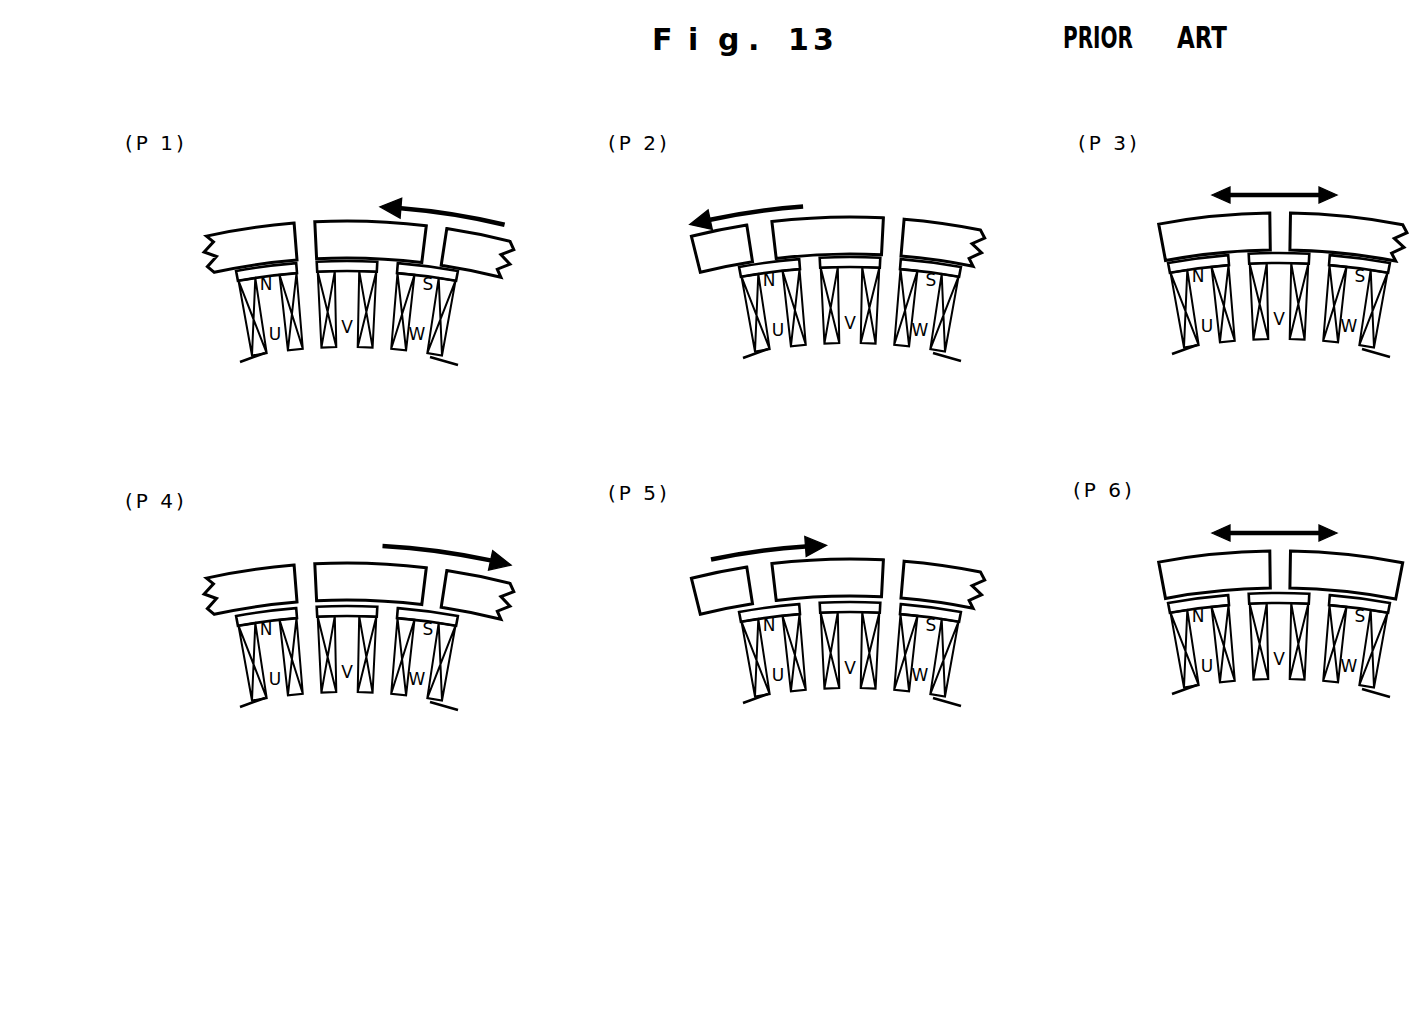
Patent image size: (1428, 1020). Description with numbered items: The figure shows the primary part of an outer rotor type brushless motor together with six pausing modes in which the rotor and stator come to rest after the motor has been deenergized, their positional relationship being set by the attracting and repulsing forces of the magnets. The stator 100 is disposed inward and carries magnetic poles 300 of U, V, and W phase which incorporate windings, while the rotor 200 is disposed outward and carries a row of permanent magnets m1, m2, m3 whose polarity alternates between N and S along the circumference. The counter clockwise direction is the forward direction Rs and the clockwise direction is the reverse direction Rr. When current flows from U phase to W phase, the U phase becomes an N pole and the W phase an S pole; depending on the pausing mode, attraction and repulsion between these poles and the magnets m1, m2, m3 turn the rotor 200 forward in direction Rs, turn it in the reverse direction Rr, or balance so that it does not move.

The stator 100 is at (779, 483).
The rotor 200 is at (767, 421).
The magnetic poles 300 is at (813, 512).
The permanent magnet m1 is at (924, 427).
The permanent magnet m2 is at (793, 385).
The permanent magnet m3 is at (478, 394).
The forward direction Rs is at (591, 189).
The reverse direction Rr is at (605, 536).